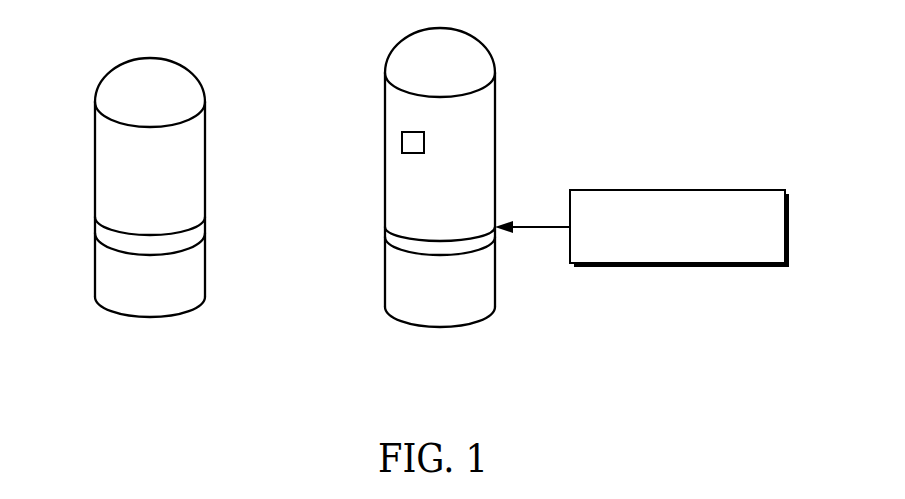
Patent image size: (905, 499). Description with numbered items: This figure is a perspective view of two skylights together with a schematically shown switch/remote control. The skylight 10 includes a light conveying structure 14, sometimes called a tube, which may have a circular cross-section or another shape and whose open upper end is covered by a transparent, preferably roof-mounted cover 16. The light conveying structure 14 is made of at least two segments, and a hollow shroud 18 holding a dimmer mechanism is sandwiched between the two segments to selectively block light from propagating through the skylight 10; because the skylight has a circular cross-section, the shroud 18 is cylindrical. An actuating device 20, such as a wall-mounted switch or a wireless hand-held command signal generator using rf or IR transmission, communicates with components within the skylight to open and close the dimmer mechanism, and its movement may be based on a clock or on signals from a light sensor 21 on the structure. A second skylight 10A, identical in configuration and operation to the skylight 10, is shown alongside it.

The skylight 10 is at (485, 199).
The second skylight 10A is at (95, 172).
The light conveying structure 14 is at (475, 113).
The transparent cover 16 is at (465, 60).
The hollow shroud 18 is at (387, 232).
The actuating device 20 is at (789, 230).
The light sensor 21 is at (402, 142).